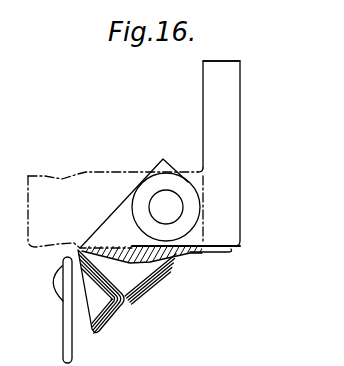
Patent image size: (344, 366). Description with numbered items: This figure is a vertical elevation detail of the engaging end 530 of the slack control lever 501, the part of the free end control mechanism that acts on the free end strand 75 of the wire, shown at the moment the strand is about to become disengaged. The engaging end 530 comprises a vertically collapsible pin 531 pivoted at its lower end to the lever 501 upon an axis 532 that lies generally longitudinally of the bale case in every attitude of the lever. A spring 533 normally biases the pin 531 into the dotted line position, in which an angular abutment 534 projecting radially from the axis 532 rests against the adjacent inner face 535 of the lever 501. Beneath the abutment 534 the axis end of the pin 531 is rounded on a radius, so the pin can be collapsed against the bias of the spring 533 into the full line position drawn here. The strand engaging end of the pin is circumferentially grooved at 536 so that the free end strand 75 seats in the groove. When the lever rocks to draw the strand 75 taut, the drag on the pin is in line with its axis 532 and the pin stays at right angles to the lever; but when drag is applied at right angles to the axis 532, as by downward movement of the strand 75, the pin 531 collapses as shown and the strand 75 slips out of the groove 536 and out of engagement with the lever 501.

The free end strand 75 is at (63, 327).
The slack control lever 501 is at (230, 123).
The engaging end 530 is at (221, 271).
The collapsible pin 531 is at (134, 297).
The axis 532 is at (168, 206).
The spring 533 is at (163, 263).
The angular abutment 534 is at (172, 156).
The inner face 535 is at (207, 80).
The groove 536 is at (118, 308).